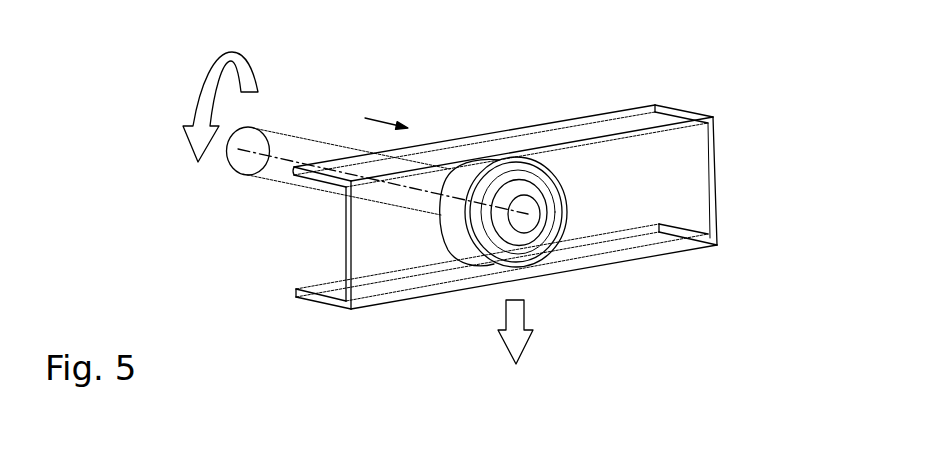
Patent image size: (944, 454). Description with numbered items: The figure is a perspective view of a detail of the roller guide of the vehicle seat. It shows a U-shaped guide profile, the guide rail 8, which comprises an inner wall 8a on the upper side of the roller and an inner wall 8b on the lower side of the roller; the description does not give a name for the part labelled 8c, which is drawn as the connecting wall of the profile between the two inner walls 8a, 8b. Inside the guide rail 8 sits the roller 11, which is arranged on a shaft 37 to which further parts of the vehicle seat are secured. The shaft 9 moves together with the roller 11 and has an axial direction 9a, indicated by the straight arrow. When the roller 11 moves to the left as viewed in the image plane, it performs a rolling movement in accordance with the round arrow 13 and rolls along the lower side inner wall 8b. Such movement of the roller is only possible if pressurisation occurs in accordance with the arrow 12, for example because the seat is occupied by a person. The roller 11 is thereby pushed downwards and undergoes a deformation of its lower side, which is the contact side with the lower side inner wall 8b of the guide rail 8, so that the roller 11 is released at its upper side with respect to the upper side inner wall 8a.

The guide rail 8 is at (500, 222).
The upper side inner wall 8a is at (317, 184).
The lower side inner wall 8b is at (327, 294).
The web of guide rail 8c is at (348, 252).
The shaft 9 is at (268, 157).
The axial direction 9a is at (378, 116).
The roller 11 is at (451, 172).
The arrow 12 is at (524, 317).
The round arrow 13 is at (202, 91).
The shaft 37 is at (267, 180).